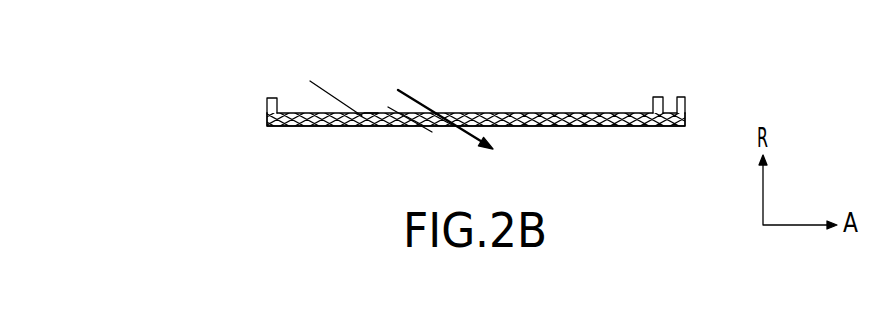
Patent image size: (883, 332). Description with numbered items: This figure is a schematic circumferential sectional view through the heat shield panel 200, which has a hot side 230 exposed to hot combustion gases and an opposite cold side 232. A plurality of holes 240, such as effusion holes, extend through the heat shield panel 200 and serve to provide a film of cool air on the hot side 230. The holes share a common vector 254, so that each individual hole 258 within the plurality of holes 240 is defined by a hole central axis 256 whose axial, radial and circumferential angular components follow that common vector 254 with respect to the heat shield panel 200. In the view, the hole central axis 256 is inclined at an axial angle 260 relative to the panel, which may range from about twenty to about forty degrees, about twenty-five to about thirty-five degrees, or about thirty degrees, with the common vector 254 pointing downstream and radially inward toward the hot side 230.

The heat shield panel 200 is at (204, 60).
The hot side 230 is at (538, 128).
The cold side 232 is at (523, 113).
The plurality of holes 240 is at (542, 113).
The common vector 254 is at (413, 99).
The hole central axis 256 is at (440, 137).
The individual hole 258 is at (370, 112).
The axial angle 260 is at (312, 103).